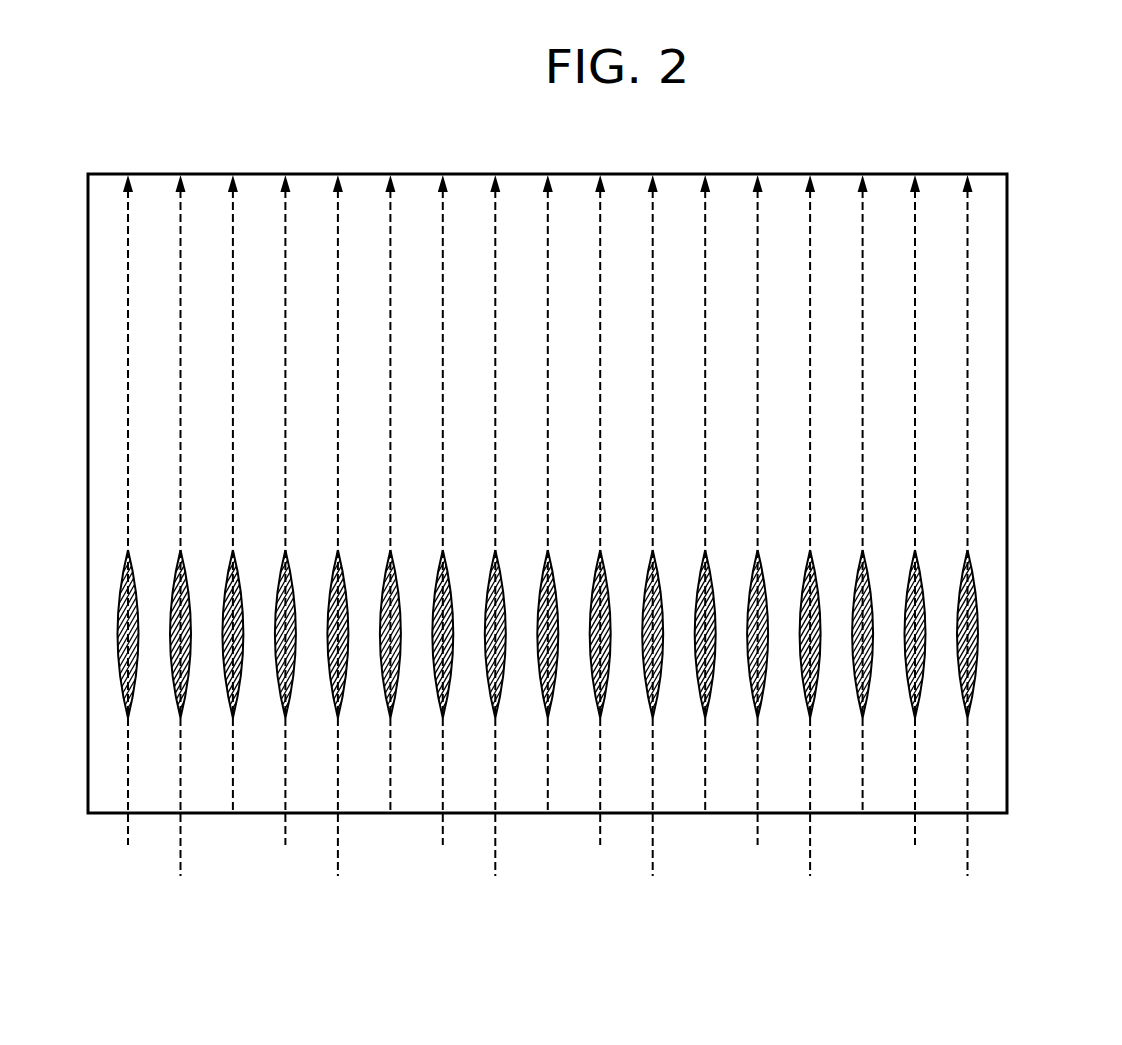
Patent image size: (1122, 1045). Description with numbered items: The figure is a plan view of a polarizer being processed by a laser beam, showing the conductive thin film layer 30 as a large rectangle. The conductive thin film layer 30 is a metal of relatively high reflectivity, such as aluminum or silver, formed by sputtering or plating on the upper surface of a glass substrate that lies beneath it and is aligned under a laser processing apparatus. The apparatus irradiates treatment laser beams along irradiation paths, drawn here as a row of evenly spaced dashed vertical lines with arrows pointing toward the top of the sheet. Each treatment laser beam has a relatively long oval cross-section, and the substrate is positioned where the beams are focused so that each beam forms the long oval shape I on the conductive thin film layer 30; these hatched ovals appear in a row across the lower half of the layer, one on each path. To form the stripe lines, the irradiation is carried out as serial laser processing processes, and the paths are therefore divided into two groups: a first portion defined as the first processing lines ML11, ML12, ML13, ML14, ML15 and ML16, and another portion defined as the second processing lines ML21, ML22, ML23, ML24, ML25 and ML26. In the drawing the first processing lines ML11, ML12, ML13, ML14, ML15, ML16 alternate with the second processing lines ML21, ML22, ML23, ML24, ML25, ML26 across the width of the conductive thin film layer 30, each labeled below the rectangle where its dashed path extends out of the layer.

The conductive thin film layer 30 is at (988, 246).
The long oval shape I is at (977, 642).
The first processing line ML11 is at (128, 526).
The first processing line ML12 is at (285, 526).
The first processing line ML13 is at (443, 526).
The first processing line ML14 is at (600, 526).
The first processing line ML15 is at (758, 526).
The first processing line ML16 is at (915, 526).
The second processing line ML21 is at (181, 541).
The second processing line ML22 is at (338, 541).
The second processing line ML23 is at (495, 541).
The second processing line ML24 is at (653, 541).
The second processing line ML25 is at (810, 541).
The second processing line ML26 is at (968, 541).